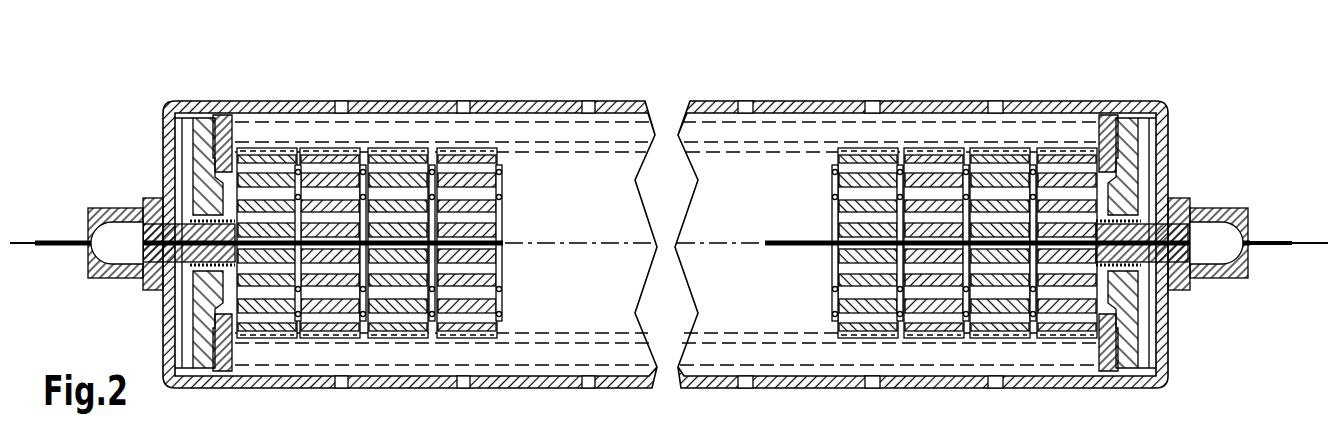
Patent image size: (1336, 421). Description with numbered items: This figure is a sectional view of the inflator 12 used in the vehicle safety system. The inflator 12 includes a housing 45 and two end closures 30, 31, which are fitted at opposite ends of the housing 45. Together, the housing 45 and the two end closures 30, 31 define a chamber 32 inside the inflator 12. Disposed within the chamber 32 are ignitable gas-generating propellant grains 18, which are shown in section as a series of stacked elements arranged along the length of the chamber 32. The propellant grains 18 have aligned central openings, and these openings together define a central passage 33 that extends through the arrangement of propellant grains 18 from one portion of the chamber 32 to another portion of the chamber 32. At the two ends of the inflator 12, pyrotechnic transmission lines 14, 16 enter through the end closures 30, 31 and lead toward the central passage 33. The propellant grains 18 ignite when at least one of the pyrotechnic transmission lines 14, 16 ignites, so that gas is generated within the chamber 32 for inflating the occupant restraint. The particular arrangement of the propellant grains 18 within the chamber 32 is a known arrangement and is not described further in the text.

The inflator 12 is at (1134, 70).
The pyrotechnic transmission line 14 is at (62, 238).
The pyrotechnic transmission line 16 is at (1265, 237).
The propellant grains 18 is at (323, 180).
The end closure 30 is at (203, 188).
The end closure 31 is at (1135, 183).
The chamber 32 is at (570, 178).
The central passage 33 is at (398, 228).
The housing 45 is at (498, 100).